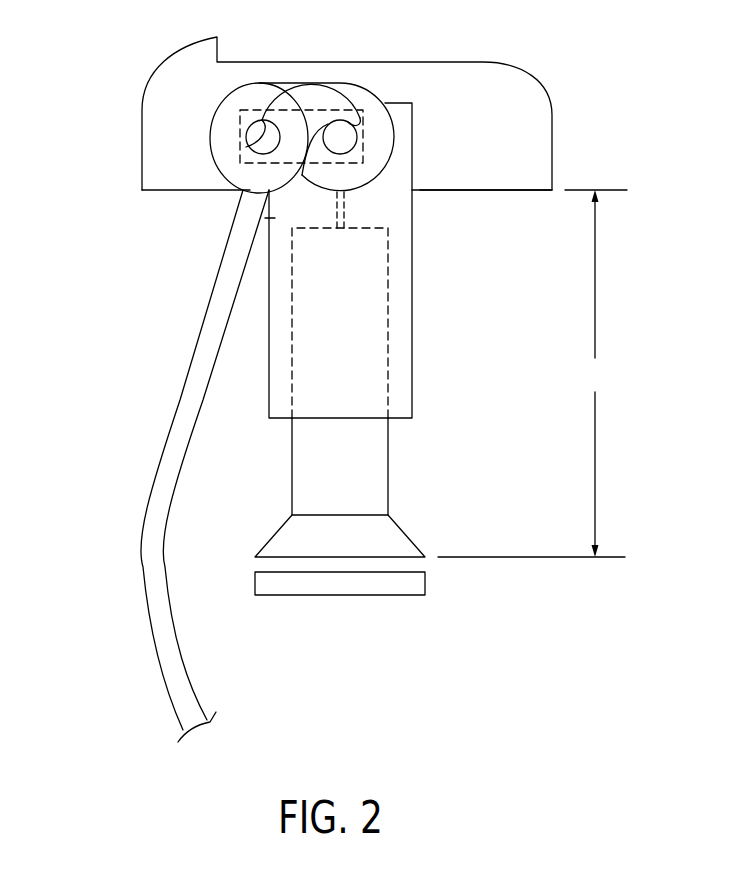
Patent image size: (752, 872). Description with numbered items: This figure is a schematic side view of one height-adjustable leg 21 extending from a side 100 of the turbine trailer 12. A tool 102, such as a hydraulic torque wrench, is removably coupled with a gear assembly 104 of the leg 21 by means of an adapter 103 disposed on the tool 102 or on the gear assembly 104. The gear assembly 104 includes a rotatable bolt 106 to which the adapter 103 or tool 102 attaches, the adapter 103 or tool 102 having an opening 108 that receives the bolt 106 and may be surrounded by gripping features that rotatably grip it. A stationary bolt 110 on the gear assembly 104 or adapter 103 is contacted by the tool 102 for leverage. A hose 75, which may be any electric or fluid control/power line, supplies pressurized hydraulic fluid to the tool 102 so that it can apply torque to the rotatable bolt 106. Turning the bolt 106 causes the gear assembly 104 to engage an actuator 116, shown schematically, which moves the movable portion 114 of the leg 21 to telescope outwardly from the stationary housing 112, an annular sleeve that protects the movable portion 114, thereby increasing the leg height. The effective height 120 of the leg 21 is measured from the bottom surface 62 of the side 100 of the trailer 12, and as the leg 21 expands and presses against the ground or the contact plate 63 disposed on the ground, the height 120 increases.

The turbine trailer 12 is at (432, 45).
The height-adjustable leg 21 is at (422, 335).
The bottom surface 62 is at (480, 190).
The contact plate 63 is at (340, 597).
The hose 75 is at (157, 467).
The side 100 is at (527, 115).
The tool 102 is at (212, 142).
The adapter 103 is at (332, 156).
The gear assembly 104 is at (356, 88).
The rotatable bolt 106 is at (245, 147).
The opening 108 is at (262, 120).
The stationary bolt 110 is at (340, 137).
The stationary housing 112 is at (388, 290).
The movable portion 114 is at (367, 468).
The actuator 116 is at (335, 207).
The height 120 is at (532, 373).